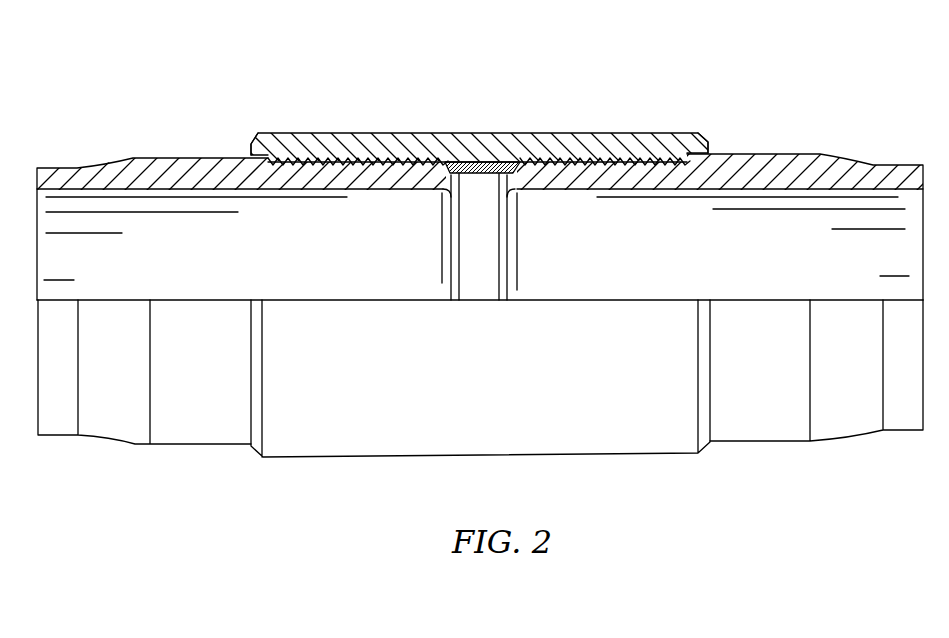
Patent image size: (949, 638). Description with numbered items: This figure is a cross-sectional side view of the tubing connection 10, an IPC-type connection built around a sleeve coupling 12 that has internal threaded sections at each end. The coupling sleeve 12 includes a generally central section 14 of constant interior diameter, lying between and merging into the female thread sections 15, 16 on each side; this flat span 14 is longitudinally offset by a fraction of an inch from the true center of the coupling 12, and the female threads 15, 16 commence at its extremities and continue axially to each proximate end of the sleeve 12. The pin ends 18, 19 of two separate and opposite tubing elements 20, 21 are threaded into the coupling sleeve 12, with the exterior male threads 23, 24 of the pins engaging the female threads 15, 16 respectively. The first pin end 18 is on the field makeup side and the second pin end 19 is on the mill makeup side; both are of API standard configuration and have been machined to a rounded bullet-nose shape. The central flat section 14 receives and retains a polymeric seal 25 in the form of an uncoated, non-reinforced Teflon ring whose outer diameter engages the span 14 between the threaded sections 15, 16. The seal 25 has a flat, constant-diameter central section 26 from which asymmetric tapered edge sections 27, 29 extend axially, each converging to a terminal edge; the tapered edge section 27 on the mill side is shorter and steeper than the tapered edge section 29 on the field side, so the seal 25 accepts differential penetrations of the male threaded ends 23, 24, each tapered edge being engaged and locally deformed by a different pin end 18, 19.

The connection 10 is at (560, 76).
The sleeve coupling 12 is at (583, 128).
The central section of constant interior diameter 14 is at (482, 162).
The female thread section 15 is at (357, 133).
The female thread section 16 is at (630, 134).
The first pin end 18 is at (453, 191).
The second pin end 19 is at (517, 186).
The tubing element 20 is at (163, 158).
The tubing element 21 is at (793, 154).
The exterior male threads 23 is at (387, 168).
The exterior male threads 24 is at (590, 163).
The polymeric seal 25 is at (488, 178).
The central section of the seal 26 is at (480, 176).
The tapered edge section 27 is at (507, 183).
The tapered edge section 29 is at (456, 191).